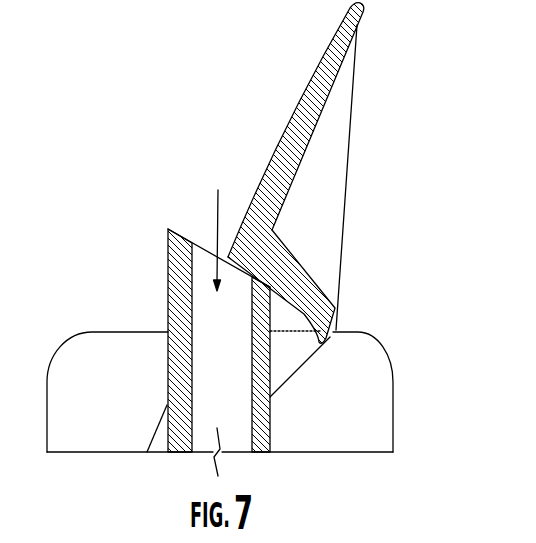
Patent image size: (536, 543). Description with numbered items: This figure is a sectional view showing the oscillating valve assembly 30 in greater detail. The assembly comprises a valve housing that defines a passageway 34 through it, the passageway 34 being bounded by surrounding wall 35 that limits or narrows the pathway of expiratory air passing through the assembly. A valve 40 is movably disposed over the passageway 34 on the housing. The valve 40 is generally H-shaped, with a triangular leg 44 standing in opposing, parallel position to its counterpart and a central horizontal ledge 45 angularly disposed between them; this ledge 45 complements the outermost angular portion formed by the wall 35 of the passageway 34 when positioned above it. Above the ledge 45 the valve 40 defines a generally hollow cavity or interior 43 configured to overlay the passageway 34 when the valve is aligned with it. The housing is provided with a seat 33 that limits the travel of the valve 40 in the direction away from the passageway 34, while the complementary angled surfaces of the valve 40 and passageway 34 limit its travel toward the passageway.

The oscillating valve assembly 30 is at (147, 131).
The seat 33 is at (383, 354).
The passageway 34 is at (218, 227).
The wall 35 is at (167, 287).
The valve 40 is at (360, 25).
The hollow cavity or interior 43 is at (323, 207).
The leg 44 is at (351, 145).
The central horizontal ledge 45 is at (310, 282).